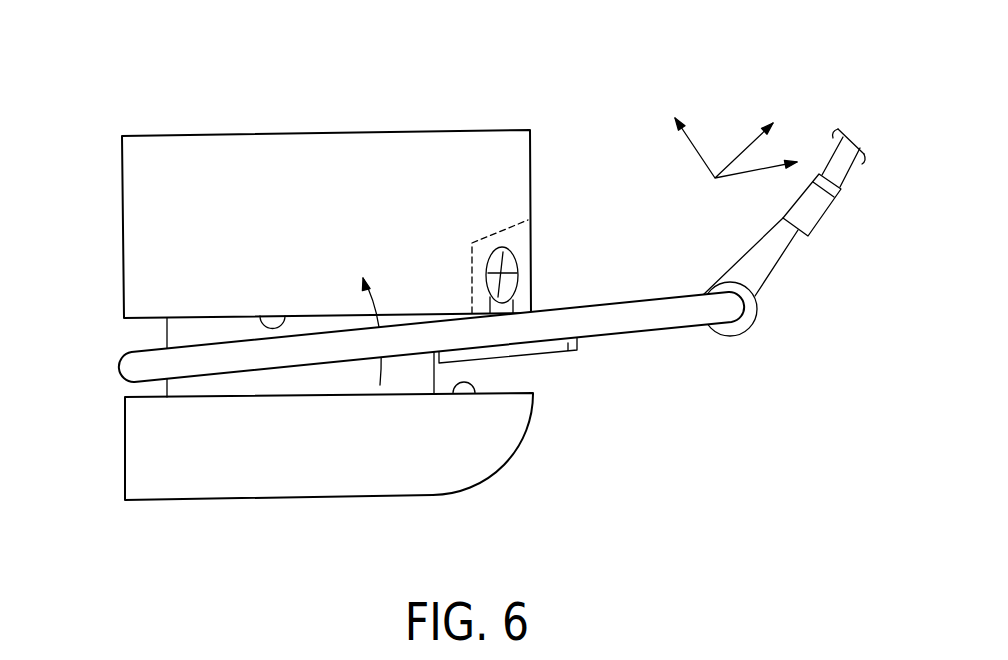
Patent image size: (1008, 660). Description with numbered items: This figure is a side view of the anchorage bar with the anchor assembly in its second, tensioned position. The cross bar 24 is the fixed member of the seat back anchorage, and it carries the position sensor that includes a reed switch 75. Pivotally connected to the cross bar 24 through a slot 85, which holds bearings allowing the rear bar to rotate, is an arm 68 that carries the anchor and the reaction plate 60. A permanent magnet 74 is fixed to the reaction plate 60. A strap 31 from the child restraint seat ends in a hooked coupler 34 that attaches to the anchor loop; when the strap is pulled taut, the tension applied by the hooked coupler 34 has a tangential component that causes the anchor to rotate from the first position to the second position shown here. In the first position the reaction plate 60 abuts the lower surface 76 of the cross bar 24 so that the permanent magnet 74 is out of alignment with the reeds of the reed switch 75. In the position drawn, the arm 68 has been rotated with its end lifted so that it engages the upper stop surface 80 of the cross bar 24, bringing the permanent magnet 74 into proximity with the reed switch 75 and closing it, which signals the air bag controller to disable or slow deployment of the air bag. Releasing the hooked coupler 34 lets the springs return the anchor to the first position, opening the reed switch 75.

The cross bar 24 is at (490, 130).
The strap 31 is at (846, 160).
The hooked coupler 34 is at (755, 257).
The reaction plate 60 is at (568, 347).
The arm 68 is at (633, 325).
The permanent magnet 74 is at (512, 303).
The reed switch 75 is at (516, 255).
The lower surface 76 is at (476, 393).
The upper stop surface 80 is at (285, 316).
The slot 85 is at (153, 337).